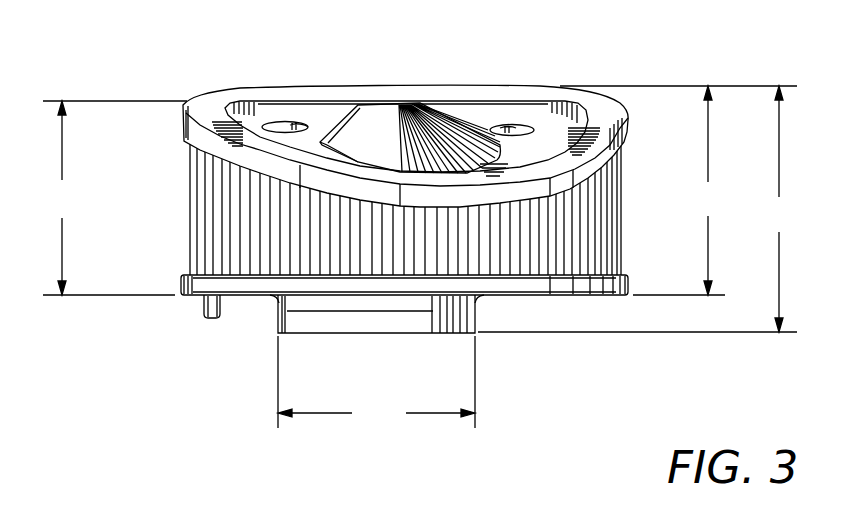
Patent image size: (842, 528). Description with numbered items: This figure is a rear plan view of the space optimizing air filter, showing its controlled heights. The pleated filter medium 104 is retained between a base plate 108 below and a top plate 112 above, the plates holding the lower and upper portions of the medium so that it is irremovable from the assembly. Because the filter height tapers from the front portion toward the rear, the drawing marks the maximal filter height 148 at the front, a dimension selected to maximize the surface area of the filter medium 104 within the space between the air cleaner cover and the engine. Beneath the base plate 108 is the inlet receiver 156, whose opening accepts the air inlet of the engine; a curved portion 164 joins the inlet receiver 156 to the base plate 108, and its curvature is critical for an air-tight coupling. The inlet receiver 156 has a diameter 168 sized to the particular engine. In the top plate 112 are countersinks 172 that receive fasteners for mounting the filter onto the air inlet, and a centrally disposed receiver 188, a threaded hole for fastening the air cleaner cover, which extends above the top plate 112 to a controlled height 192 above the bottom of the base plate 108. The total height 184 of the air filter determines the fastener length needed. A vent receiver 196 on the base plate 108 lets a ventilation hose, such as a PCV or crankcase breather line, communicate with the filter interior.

The filter medium 104 is at (188, 232).
The base plate 108 is at (547, 295).
The top plate 112 is at (187, 118).
The maximal filter height 148 is at (678, 190).
The inlet receiver 156 is at (363, 335).
The curved portion 164 is at (275, 301).
The diameter 168 is at (376, 382).
The countersinks 172 is at (510, 130).
The total height 184 is at (638, 209).
The receiver 188 is at (390, 105).
The controlled height 192 is at (115, 198).
The vent receivers 196 is at (205, 320).